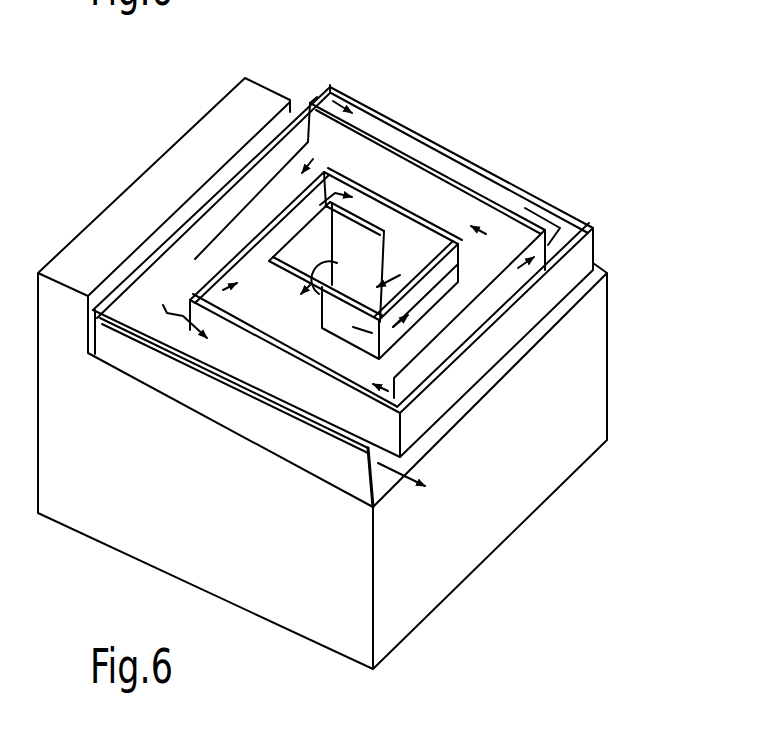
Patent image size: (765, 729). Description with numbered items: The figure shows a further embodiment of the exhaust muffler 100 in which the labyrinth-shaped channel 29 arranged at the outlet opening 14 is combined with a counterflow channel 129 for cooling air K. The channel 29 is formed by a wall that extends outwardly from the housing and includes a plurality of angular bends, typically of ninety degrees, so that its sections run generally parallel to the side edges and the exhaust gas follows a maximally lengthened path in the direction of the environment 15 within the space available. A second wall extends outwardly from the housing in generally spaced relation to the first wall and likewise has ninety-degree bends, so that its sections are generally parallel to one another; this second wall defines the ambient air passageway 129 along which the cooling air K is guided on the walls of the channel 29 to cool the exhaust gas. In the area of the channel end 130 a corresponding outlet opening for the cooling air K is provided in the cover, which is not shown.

The environment 15 is at (580, 565).
The exhaust muffler 100 is at (384, 253).
The counterflow channel 129 is at (582, 218).
The labyrinth-shaped channel 29 is at (508, 214).
The channel end 130 is at (386, 262).
The outlet opening 14 is at (336, 248).
The cooling air K is at (317, 97).